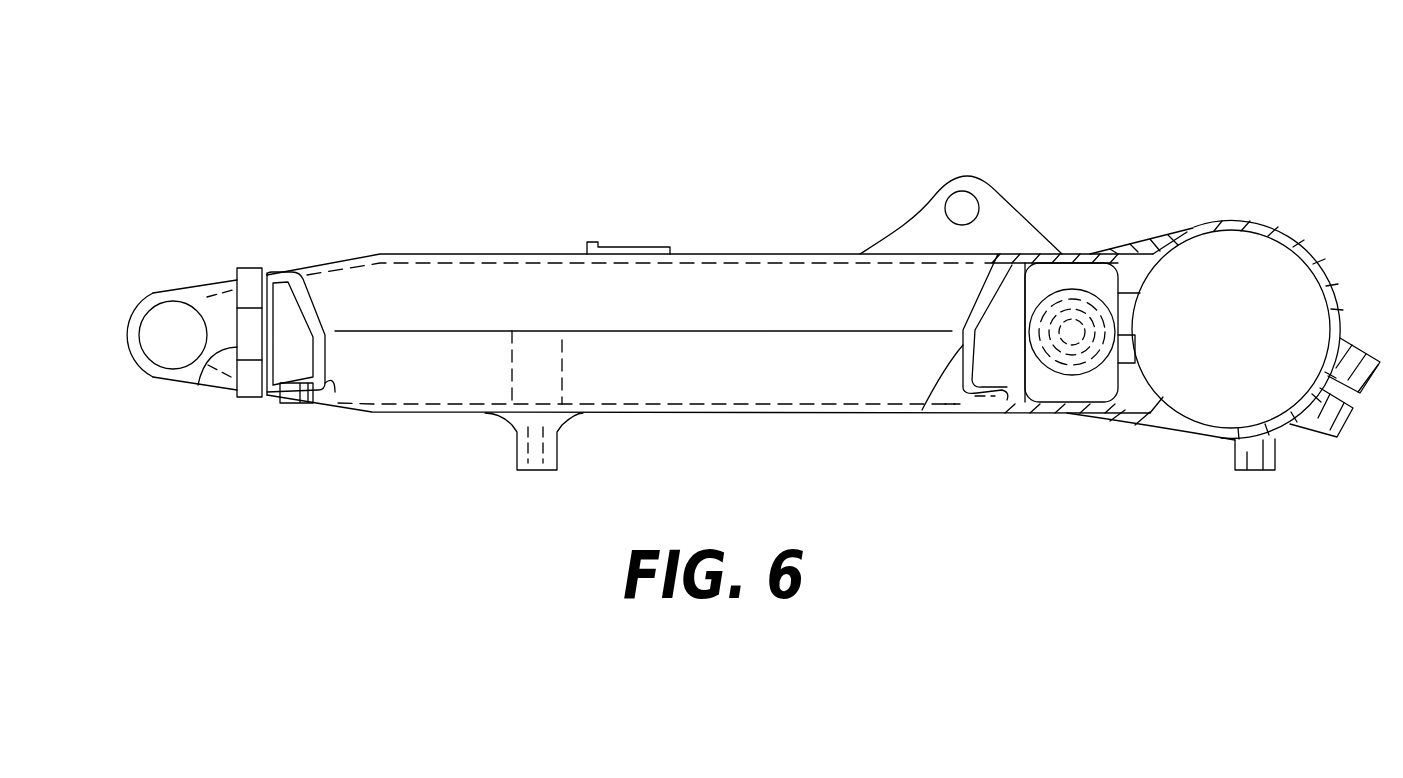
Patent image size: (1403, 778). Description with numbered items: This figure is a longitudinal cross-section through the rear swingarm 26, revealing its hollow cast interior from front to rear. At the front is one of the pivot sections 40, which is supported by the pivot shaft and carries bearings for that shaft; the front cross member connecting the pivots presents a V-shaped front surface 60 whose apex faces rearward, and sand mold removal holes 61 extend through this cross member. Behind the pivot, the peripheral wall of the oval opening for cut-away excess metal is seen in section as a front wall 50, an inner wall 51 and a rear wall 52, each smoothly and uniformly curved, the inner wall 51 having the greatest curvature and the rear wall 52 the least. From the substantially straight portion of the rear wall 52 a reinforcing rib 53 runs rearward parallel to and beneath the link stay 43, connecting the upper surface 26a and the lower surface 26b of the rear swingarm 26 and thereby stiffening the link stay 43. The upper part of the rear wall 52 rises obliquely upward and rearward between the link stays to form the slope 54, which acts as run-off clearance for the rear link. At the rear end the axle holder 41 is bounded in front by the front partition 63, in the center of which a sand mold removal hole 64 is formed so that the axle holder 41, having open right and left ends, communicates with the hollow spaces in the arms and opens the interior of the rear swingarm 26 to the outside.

The rear swingarm 26 is at (347, 172).
The upper surface of the rear swingarm 26a is at (1065, 253).
The lower surface of the rear swingarm 26b is at (1037, 413).
The pivot section 40 is at (143, 322).
The axle holder 41 is at (1270, 223).
The link stay 43 is at (917, 228).
The front wall 50 is at (325, 372).
The inner wall 51 is at (672, 380).
The rear wall 52 is at (932, 388).
The reinforcing rib 53 is at (1005, 398).
The slope 54 is at (998, 254).
The front surface of the front cross member 60 is at (257, 372).
The sand mold removal hole 61 is at (198, 385).
The front partition 63 is at (1145, 292).
The sand mold removal hole 64 is at (1125, 335).